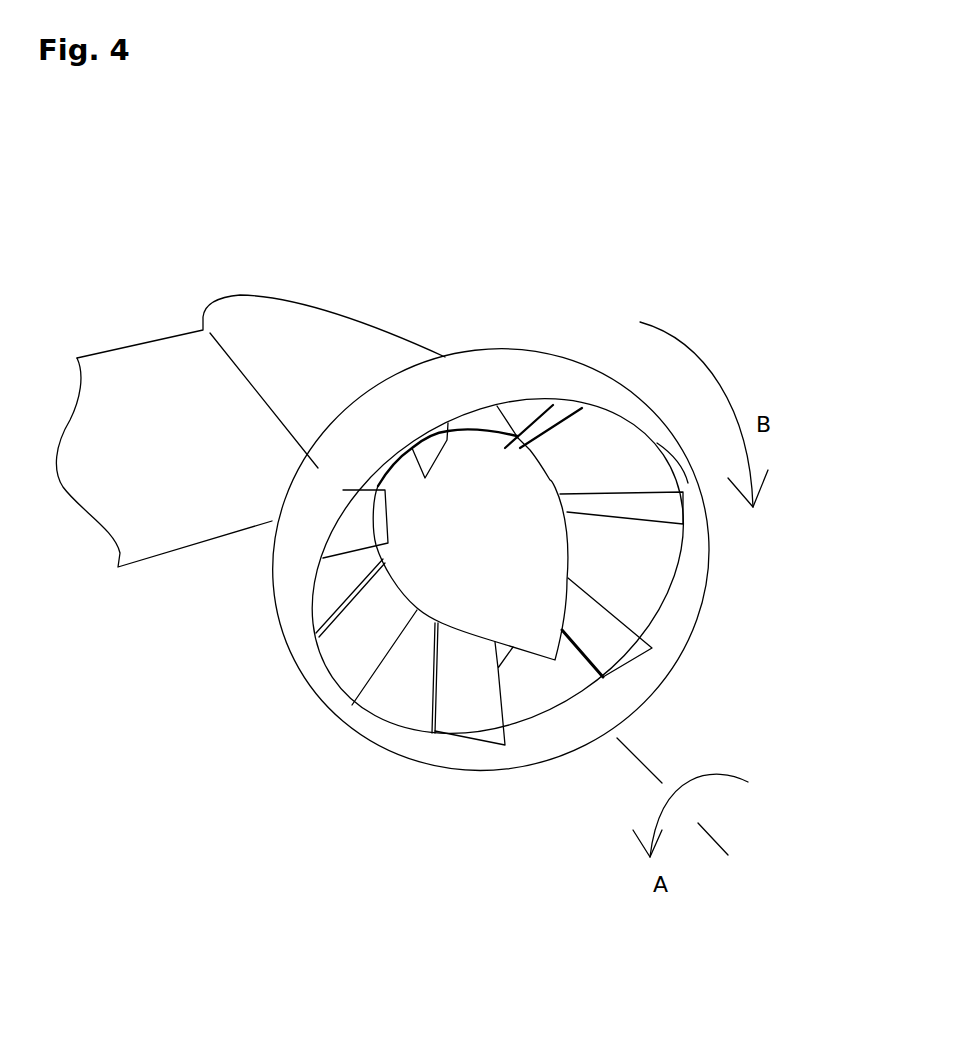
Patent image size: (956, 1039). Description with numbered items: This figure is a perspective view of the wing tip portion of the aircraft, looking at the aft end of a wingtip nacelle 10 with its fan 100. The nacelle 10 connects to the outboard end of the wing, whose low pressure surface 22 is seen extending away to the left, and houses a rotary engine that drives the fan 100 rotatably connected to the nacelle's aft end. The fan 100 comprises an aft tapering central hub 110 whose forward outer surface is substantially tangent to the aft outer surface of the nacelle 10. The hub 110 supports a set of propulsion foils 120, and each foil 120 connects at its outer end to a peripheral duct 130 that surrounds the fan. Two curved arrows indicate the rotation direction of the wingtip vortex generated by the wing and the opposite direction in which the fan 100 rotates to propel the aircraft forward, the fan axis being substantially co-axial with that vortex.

The wingtip nacelle 10 is at (445, 282).
The low pressure surface 22 is at (207, 480).
The fan 100 is at (572, 328).
The central hub 110 is at (518, 652).
The propulsion foils 120 is at (600, 613).
The peripheral duct 130 is at (290, 641).